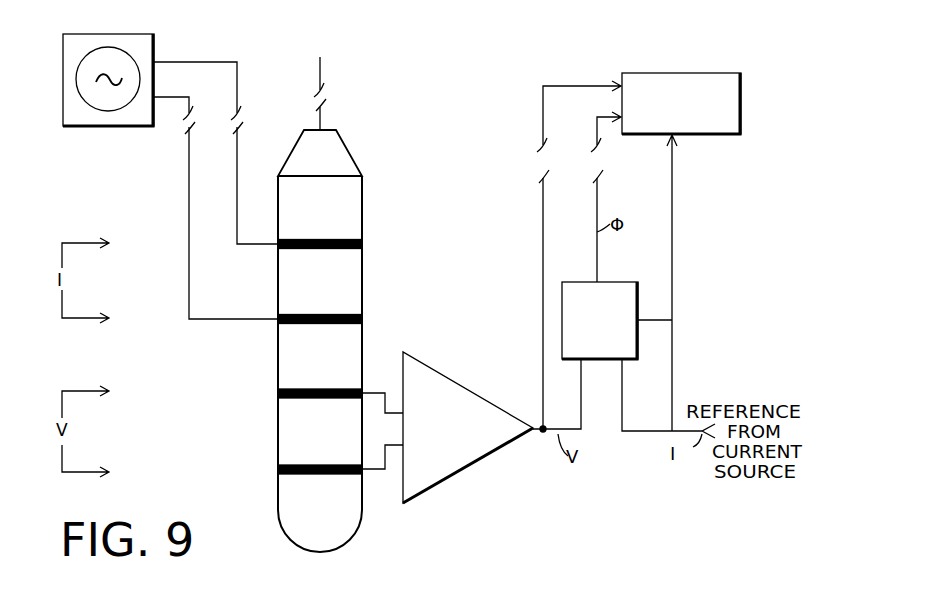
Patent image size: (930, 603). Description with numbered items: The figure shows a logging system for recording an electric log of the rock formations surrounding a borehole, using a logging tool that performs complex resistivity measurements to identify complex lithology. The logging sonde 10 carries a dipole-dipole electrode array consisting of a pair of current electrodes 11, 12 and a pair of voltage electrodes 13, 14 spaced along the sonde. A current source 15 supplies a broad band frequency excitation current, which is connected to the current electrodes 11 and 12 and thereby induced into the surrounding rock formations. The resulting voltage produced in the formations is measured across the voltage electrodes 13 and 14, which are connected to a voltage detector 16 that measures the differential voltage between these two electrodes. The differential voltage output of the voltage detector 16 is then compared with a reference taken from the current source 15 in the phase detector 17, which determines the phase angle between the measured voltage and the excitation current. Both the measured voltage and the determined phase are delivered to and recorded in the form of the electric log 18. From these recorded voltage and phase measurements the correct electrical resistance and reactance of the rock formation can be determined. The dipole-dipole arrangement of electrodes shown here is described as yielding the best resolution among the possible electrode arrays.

The logging sonde 10 is at (288, 535).
The current electrode 11 is at (362, 244).
The current electrode 12 is at (362, 319).
The voltage electrode 13 is at (278, 393).
The voltage electrode 14 is at (278, 469).
The current source 15 is at (104, 128).
The voltage detector 16 is at (470, 462).
The phase detector 17 is at (612, 282).
The electric log 18 is at (709, 136).